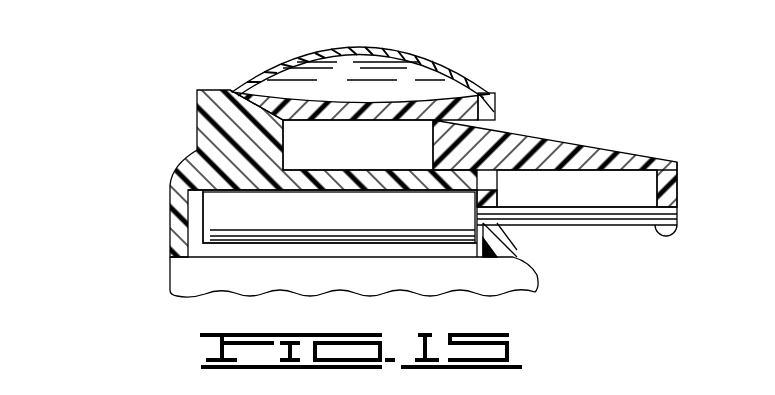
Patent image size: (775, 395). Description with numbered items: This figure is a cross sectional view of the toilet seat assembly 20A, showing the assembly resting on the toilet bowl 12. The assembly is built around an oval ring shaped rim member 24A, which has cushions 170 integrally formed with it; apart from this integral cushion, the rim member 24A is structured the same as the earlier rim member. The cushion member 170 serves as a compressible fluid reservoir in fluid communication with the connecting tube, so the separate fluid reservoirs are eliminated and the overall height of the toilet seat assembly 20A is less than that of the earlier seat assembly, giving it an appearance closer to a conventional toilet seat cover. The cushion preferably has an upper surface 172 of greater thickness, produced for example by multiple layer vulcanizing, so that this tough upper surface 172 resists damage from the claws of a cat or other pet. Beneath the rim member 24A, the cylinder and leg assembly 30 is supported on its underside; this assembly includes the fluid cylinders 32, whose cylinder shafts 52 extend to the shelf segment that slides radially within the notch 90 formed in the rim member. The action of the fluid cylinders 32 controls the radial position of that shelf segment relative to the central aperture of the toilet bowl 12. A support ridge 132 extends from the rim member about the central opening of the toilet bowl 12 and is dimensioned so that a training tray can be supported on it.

The toilet seat assembly 20A is at (251, 60).
The cushion member 170 is at (381, 46).
The upper surface 172 is at (466, 71).
The rim member 24A is at (197, 118).
The notch 90 is at (370, 155).
The cylinder shaft 52 is at (547, 207).
The fluid cylinder 32 is at (200, 203).
The cylinder and leg assembly 30 is at (262, 243).
The toilet bowl 12 is at (185, 278).
The support ridge 132 is at (513, 238).